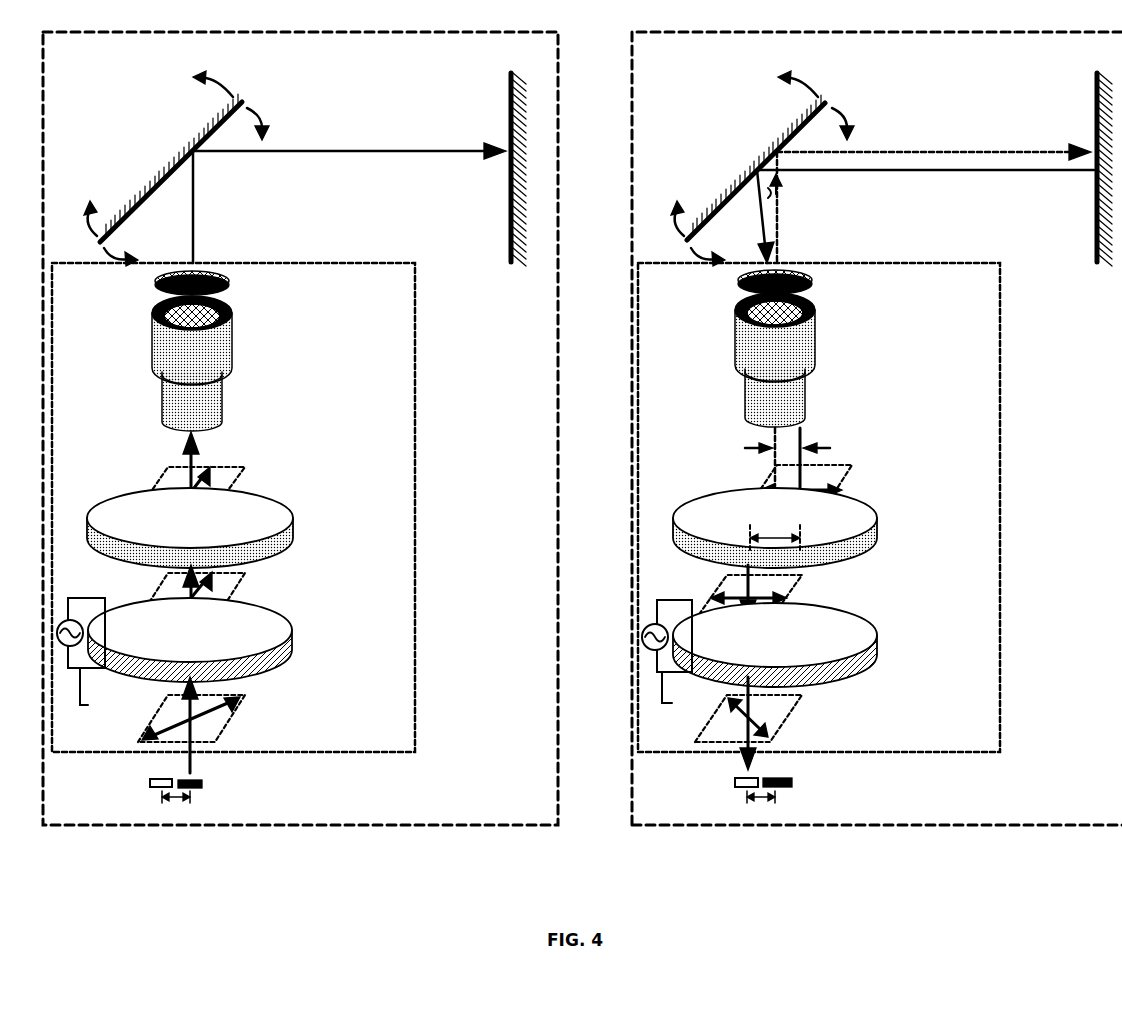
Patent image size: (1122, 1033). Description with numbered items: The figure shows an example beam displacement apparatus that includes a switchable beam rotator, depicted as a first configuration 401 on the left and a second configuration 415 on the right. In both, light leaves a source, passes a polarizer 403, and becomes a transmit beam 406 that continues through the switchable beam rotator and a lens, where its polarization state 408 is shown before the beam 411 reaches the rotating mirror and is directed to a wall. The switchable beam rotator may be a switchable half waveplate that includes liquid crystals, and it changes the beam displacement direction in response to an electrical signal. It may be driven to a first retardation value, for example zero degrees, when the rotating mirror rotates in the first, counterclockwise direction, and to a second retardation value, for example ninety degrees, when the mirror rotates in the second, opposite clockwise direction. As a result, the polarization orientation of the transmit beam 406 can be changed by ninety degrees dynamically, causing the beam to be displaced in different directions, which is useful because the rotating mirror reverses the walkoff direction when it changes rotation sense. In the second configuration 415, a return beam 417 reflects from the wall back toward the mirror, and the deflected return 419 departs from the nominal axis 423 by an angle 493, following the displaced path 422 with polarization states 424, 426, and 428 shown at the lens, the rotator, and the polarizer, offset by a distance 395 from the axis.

The first optical system configuration 401 is at (323, 828).
The second optical system configuration 415 is at (882, 828).
The distance D2 395 is at (807, 539).
The polarizer 403 is at (236, 728).
The transmit beam 406 is at (248, 592).
The polarization state after lens 408 is at (236, 488).
The incident light beam 411 is at (208, 207).
The return beam 417 is at (905, 177).
The deflected return beam 419 is at (770, 218).
The deflected beam path 422 is at (810, 435).
The nominal beam axis 423 is at (740, 449).
The polarization state at lens 424 is at (856, 480).
The polarization state at rotator 426 is at (806, 590).
The polarization state at polarizer 428 is at (796, 728).
The beam deflection angle 493 is at (780, 180).